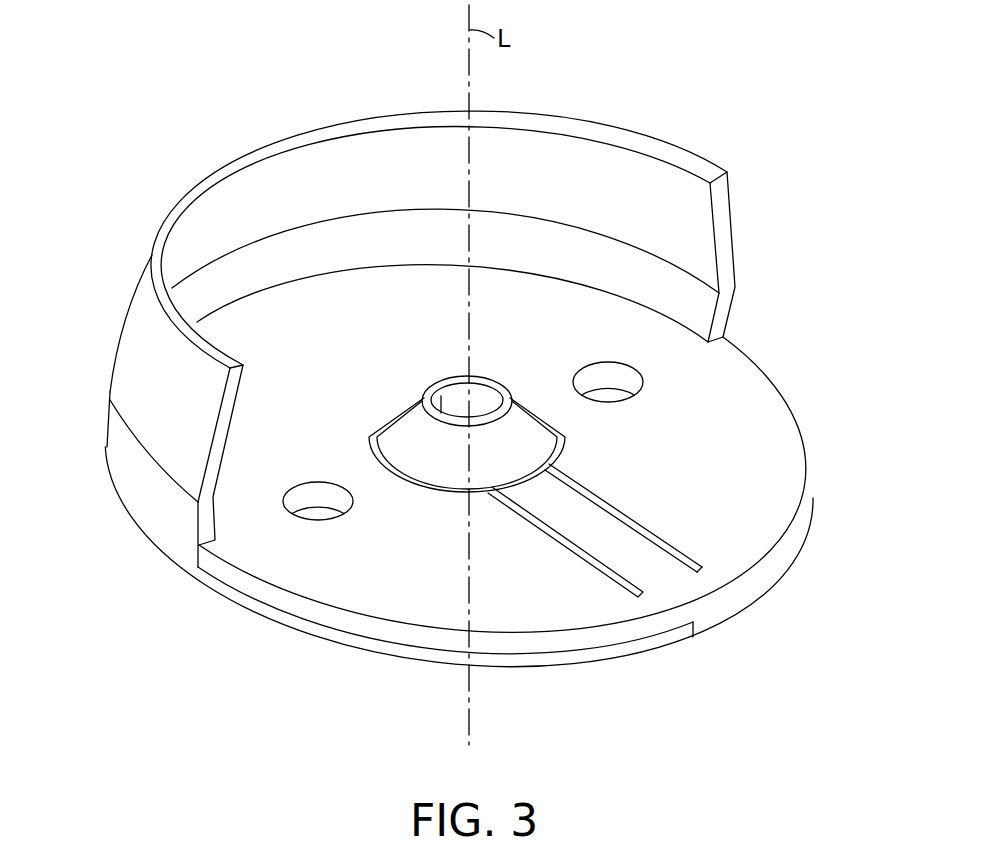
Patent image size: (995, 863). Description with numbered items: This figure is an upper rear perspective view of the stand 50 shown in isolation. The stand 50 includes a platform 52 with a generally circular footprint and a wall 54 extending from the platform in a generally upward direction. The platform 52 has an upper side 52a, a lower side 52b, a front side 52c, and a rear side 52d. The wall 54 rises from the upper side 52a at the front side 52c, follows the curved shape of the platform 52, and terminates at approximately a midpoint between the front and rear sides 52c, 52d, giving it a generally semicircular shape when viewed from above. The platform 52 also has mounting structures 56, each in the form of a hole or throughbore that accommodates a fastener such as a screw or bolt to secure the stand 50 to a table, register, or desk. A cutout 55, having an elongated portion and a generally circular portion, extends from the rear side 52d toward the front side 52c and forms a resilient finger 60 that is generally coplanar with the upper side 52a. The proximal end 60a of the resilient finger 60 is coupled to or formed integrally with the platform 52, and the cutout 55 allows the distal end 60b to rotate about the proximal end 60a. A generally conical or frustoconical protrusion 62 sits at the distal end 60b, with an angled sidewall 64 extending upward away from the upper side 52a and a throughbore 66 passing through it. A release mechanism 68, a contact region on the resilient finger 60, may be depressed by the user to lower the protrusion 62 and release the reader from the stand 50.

The stand 50 is at (762, 378).
The platform 52 is at (801, 482).
The upper side 52a is at (781, 437).
The lower side 52b is at (789, 581).
The front side 52c is at (130, 240).
The rear side 52d is at (707, 637).
The wall 54 is at (648, 172).
The cutout 55 is at (546, 546).
The mounting structure 56 is at (296, 512).
The resilient finger 60 is at (630, 538).
The proximal end 60a is at (670, 583).
The distal end 60b is at (361, 397).
The protrusion 62 is at (535, 433).
The angled sidewall 64 is at (435, 464).
The throughbore 66 is at (452, 386).
The release mechanism 68 is at (617, 575).